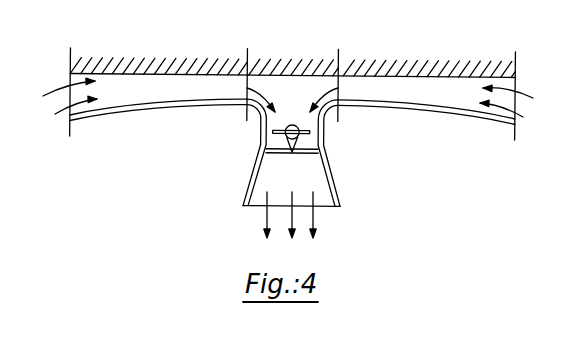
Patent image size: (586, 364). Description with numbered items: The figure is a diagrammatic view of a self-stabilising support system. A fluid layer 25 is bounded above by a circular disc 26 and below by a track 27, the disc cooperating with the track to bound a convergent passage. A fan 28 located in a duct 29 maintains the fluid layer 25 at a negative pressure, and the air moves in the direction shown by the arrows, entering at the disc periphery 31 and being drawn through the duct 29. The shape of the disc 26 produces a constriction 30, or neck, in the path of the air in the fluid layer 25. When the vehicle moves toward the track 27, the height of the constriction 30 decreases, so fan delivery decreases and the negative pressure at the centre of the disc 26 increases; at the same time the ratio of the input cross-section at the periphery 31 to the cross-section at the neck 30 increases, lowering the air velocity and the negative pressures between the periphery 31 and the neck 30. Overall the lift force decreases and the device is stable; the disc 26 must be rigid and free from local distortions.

The fluid layer 25 is at (427, 85).
The circular disc 26 is at (422, 107).
The track 27 is at (290, 68).
The fan 28 is at (300, 135).
The duct 29 is at (260, 160).
The constriction 30 is at (245, 78).
The disc periphery 31 is at (70, 80).